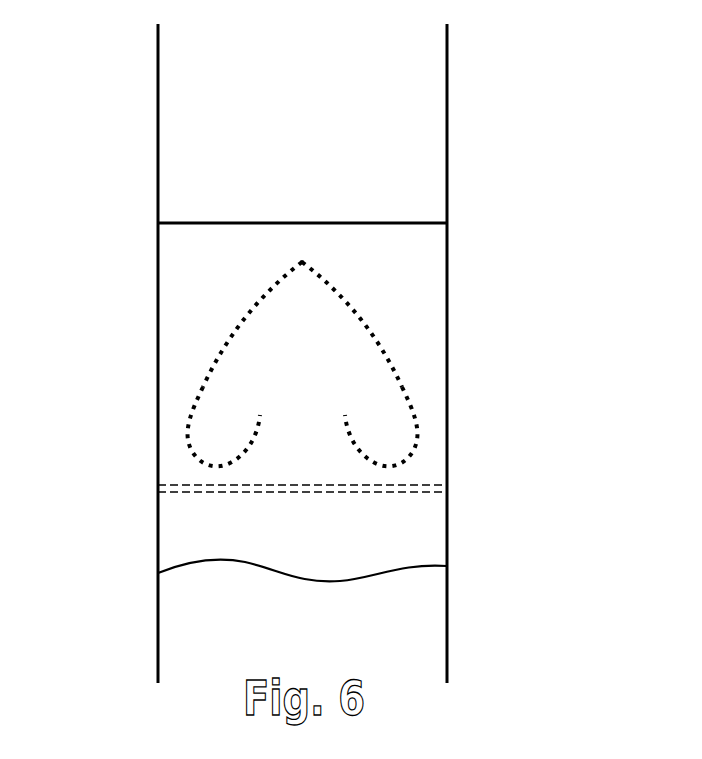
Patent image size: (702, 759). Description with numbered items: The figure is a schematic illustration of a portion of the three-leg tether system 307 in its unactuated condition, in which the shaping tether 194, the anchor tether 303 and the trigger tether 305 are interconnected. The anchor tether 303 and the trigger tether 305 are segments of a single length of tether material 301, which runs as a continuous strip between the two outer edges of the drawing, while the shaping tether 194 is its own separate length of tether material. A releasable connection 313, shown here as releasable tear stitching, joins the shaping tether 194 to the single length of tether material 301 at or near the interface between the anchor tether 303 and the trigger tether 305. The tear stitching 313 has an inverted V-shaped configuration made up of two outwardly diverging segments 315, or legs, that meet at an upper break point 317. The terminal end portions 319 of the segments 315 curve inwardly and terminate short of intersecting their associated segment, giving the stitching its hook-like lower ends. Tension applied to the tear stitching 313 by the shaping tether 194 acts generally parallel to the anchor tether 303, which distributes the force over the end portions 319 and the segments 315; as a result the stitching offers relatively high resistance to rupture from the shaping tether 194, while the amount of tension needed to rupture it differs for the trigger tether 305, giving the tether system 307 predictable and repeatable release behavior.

The shaping tether 194 is at (420, 168).
The single length of tether material 301 is at (420, 262).
The anchor tether 303 is at (178, 618).
The trigger tether 305 is at (407, 541).
The three-leg tether system 307 is at (106, 205).
The releasable connection 313 is at (208, 375).
The segments 315 is at (397, 375).
The break point 317 is at (302, 262).
The terminal end portions 319 is at (363, 467).